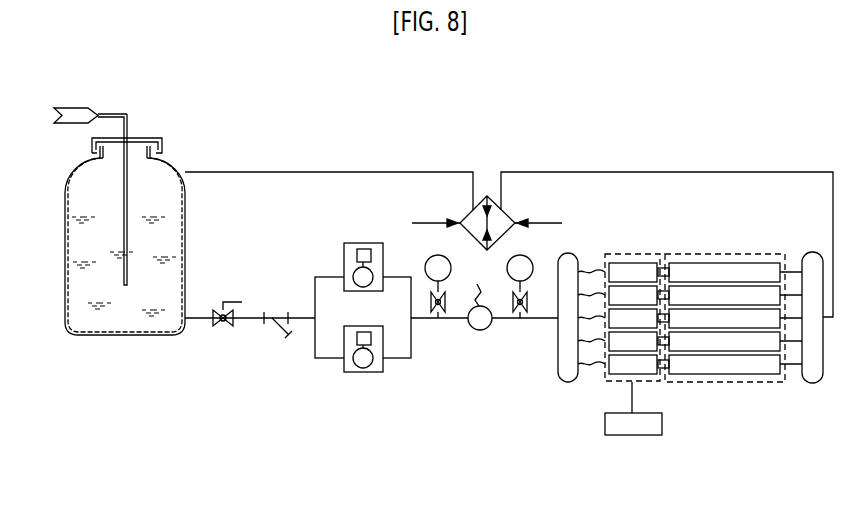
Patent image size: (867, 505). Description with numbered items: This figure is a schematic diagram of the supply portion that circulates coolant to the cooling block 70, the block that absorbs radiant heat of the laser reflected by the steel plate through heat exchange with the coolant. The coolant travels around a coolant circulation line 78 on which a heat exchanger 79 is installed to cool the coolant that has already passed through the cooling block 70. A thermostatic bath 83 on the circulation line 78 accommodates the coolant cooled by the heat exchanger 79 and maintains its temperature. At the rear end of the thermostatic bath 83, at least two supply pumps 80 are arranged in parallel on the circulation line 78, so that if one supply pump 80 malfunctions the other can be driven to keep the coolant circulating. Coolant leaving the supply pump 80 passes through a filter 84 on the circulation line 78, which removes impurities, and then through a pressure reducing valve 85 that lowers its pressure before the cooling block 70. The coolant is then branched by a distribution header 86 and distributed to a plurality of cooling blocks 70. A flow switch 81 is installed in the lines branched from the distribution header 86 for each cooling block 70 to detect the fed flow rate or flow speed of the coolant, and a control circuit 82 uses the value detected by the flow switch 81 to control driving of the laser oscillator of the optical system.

The cooling block 70 is at (742, 382).
The coolant circulation line 78 is at (266, 172).
The heat exchanger 79 is at (504, 207).
The supply pump 80 is at (363, 243).
The flow switch 81 is at (647, 383).
The control circuit 82 is at (632, 436).
The thermostatic bath 83 is at (88, 245).
The filter 84 is at (282, 335).
The pressure reducing valve 85 is at (480, 331).
The distribution header 86 is at (573, 260).